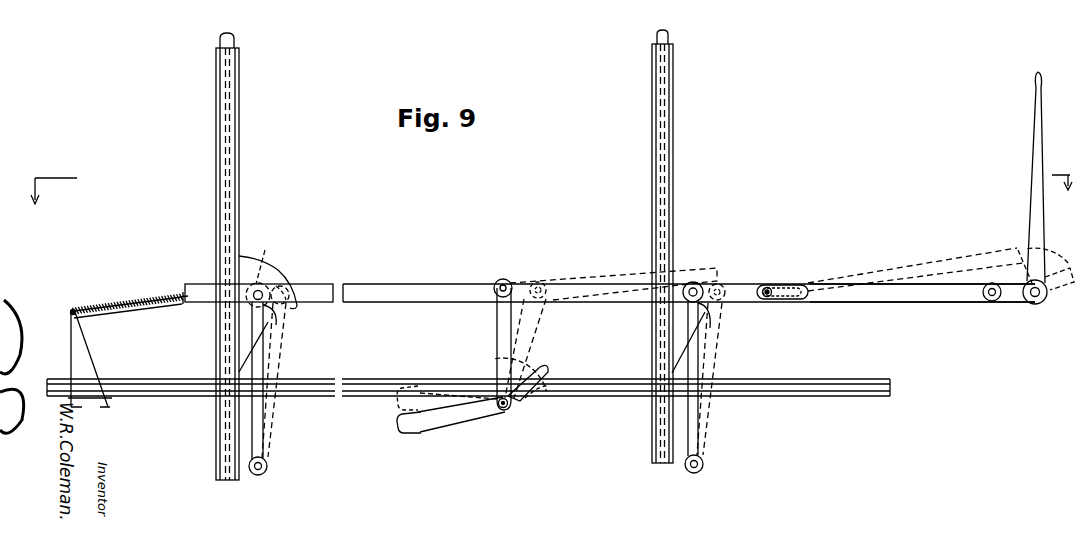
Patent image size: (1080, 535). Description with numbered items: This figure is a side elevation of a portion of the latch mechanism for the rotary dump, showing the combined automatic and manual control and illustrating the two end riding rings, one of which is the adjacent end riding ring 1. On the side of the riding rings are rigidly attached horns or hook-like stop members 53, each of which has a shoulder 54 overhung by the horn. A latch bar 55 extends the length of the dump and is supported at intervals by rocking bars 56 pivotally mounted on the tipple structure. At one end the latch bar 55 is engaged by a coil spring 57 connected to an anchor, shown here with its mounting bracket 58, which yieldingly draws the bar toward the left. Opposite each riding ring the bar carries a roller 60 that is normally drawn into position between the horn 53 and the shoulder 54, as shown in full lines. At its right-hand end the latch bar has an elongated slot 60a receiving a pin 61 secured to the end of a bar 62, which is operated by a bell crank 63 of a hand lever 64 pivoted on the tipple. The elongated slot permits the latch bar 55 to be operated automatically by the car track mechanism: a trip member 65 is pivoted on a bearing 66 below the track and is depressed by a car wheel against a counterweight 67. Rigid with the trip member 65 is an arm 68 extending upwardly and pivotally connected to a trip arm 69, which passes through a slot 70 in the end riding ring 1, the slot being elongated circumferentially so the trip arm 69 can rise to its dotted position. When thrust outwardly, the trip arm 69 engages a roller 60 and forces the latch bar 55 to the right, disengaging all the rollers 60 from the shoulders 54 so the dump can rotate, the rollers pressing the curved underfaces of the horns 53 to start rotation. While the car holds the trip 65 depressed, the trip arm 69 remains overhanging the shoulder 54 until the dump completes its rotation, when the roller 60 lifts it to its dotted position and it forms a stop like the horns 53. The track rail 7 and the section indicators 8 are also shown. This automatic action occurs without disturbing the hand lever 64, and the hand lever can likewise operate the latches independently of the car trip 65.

The end riding ring 1 is at (240, 104).
The rail 7 is at (210, 396).
The section line indicator 8 is at (550, 200).
The horn or hook-like stop member 53 is at (284, 272).
The shoulder 54 is at (278, 320).
The latch bar 55 is at (410, 285).
The rocking bar 56 is at (264, 440).
The coil spring 57 is at (146, 311).
The bracket 58 is at (71, 345).
The roller 60 is at (735, 272).
The elongated slot 60a is at (792, 285).
The pin 61 is at (777, 284).
The bar 62 is at (898, 303).
The bell crank 63 is at (1016, 303).
The hand lever 64 is at (1034, 132).
The trip member 65 is at (536, 404).
The bearing 66 is at (501, 412).
The counterweight 67 is at (416, 440).
The arm 68 is at (497, 357).
The trip arm 69 is at (515, 283).
The slot 70 is at (647, 272).